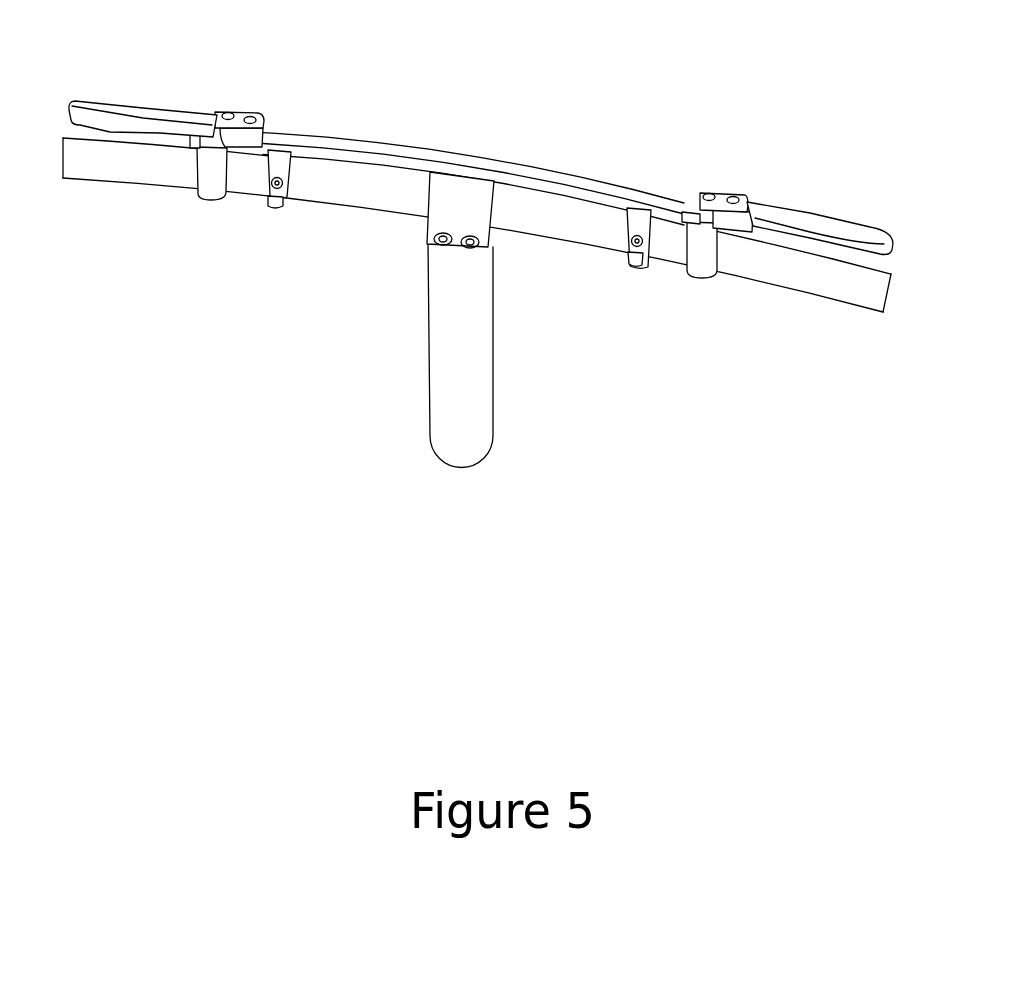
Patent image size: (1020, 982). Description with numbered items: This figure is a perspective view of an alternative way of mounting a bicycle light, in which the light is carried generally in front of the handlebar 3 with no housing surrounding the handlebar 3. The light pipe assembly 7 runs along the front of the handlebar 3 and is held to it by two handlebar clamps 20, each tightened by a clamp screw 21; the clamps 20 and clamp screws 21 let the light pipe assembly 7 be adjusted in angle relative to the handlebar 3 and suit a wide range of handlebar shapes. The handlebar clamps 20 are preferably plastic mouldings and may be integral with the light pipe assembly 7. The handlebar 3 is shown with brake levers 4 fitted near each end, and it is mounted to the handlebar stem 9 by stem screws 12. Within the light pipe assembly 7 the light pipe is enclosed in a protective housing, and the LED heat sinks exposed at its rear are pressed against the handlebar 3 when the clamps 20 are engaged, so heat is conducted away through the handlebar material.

The handlebar 3 is at (800, 272).
The brake levers 4 is at (119, 108).
The light pipe assembly 7 is at (560, 180).
The handlebar stem 9 is at (470, 413).
The stem screws 12 is at (469, 240).
The handlebar clamps 20 is at (281, 163).
The clamp screws 21 is at (272, 190).